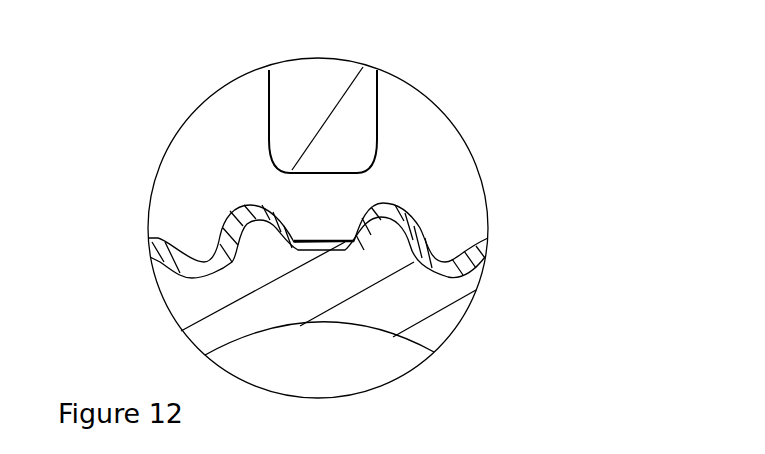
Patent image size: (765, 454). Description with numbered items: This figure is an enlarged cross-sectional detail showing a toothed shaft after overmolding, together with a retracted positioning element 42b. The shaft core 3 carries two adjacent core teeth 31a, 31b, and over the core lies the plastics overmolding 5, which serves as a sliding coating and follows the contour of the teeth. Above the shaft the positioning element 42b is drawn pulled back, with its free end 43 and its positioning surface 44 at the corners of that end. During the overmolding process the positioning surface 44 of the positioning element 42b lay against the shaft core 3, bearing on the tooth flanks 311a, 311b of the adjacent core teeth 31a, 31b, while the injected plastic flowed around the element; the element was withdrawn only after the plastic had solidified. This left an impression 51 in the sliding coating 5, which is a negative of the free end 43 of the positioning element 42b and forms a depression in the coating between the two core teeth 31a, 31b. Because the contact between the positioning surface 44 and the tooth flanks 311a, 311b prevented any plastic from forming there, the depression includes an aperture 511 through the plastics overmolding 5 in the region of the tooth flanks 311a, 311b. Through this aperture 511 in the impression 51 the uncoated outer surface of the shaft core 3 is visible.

The shaft core 3 is at (407, 300).
The plastics overmolding 5 is at (176, 252).
The core tooth 31a is at (385, 240).
The core tooth 31b is at (265, 238).
The tooth flank 311a is at (360, 216).
The tooth flank 311b is at (297, 214).
The impression 51 is at (288, 188).
The aperture 511 is at (292, 227).
The positioning element 42b is at (297, 82).
The free end 43 is at (327, 158).
The positioning surface 44 is at (272, 163).